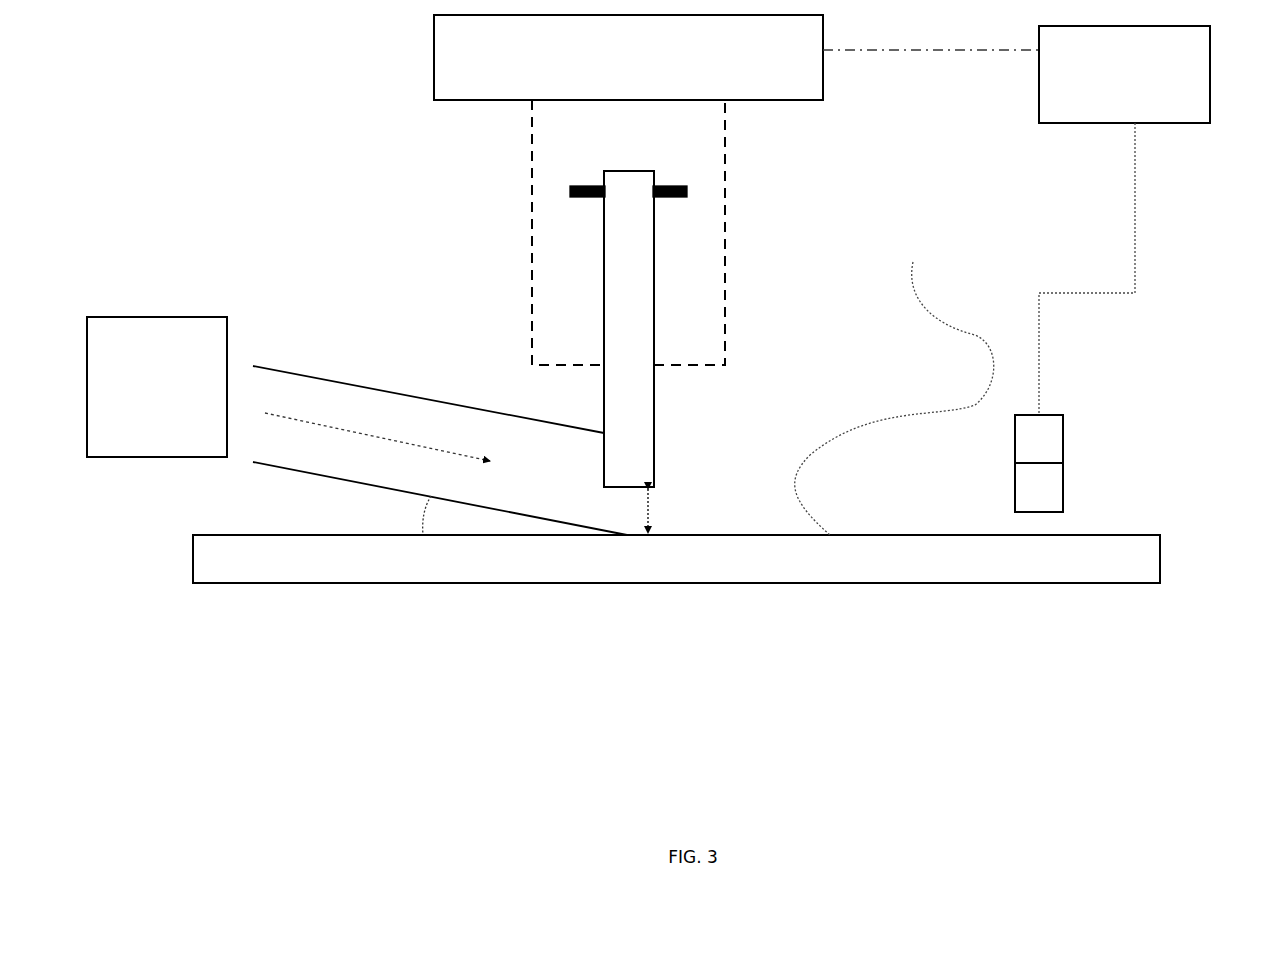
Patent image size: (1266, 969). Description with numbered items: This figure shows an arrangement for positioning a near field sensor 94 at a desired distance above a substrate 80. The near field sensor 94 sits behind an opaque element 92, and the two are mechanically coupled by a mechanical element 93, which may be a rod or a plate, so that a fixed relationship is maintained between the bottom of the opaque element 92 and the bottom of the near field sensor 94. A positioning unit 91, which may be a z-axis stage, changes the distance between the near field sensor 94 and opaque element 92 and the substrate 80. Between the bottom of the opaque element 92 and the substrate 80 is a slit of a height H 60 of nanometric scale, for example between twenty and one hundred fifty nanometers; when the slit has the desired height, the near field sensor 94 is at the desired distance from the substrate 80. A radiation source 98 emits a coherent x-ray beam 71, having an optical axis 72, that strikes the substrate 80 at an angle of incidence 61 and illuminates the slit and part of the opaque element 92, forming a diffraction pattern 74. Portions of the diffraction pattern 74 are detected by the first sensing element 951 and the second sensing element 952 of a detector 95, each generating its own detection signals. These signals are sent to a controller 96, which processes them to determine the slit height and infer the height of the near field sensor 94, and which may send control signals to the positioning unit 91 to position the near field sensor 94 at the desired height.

The positioning unit 91 is at (628, 57).
The opaque element 92 is at (628, 171).
The mechanical element 93 is at (573, 186).
The near field sensor 94 is at (532, 275).
The detector 95 is at (990, 452).
The first sensing element 951 is at (1067, 437).
The second sensing element 952 is at (1067, 490).
The controller 96 is at (1124, 74).
The radiation source 98 is at (157, 387).
The coherent x-ray beam 71 is at (440, 427).
The optical axis 72 is at (424, 437).
The angle of incidence 61 is at (330, 515).
The height H 60 is at (672, 511).
The diffraction pattern 74 is at (908, 375).
The substrate 80 is at (676, 559).